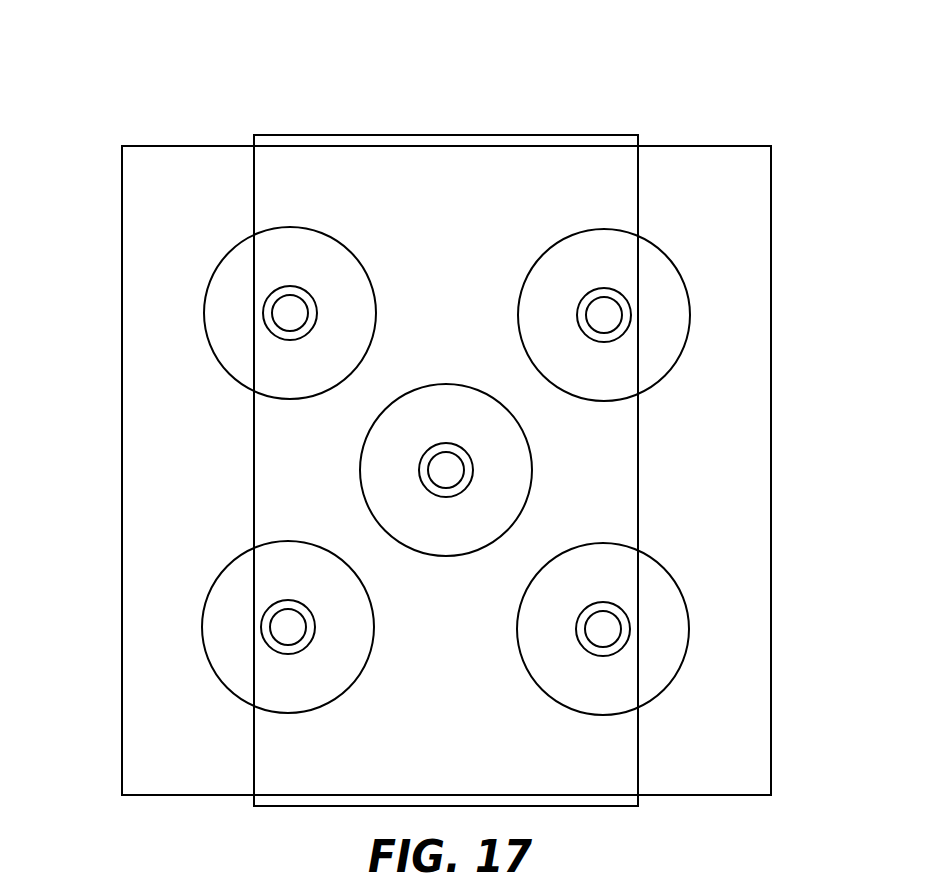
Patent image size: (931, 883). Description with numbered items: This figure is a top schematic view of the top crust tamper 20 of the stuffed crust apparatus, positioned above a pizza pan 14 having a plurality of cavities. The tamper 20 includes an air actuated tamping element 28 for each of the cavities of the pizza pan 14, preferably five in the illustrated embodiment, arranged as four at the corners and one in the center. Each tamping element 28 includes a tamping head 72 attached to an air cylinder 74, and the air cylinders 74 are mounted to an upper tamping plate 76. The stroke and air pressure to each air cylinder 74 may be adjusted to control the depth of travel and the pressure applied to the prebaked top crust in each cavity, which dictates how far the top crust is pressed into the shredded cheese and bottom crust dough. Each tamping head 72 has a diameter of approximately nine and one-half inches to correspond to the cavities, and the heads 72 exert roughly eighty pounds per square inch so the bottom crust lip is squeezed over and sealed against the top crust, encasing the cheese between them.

The top crust tamper 20 is at (439, 410).
The pizza pan 14 is at (748, 320).
The upper tamping plate 76 is at (485, 143).
The tamping element 28 is at (312, 226).
The tamping head 72 is at (345, 282).
The air cylinder 74 is at (580, 319).